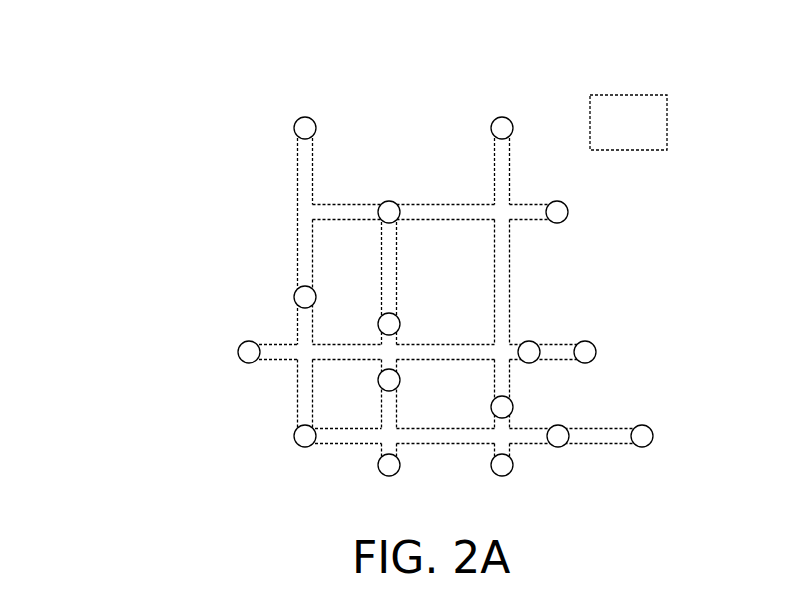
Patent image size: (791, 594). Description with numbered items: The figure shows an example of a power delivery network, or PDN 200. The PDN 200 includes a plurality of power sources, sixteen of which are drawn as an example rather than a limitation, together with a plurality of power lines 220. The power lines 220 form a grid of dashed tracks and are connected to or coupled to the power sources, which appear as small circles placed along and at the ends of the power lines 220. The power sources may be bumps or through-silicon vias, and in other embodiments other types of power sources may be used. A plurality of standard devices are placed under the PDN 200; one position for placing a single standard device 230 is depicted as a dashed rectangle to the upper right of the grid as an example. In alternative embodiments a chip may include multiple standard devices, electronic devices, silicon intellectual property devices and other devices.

The power delivery network 200 is at (335, 93).
The power lines 220 is at (297, 210).
The standard device 230 is at (667, 121).